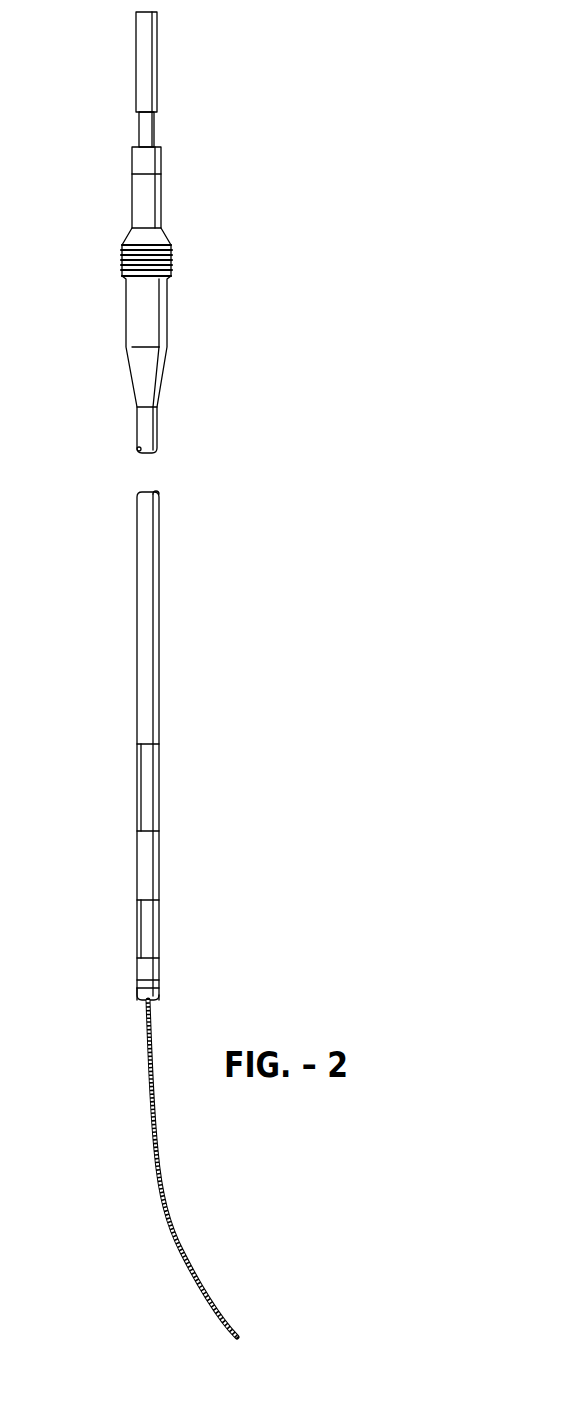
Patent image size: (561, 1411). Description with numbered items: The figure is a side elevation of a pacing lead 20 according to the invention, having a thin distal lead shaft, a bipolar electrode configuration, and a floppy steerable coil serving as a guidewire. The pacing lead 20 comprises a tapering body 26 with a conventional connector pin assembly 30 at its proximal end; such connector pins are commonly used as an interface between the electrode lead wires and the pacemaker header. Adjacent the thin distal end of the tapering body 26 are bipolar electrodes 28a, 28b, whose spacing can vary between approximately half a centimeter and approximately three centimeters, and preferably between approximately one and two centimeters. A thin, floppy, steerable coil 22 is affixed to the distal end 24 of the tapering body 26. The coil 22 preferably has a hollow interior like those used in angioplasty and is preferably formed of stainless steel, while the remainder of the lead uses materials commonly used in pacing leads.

The pacing lead 20 is at (232, 517).
The floppy steerable coil 22 is at (166, 1192).
The distal end 24 is at (130, 1010).
The tapering body 26 is at (150, 634).
The bipolar electrode 28a is at (165, 742).
The bipolar electrode 28b is at (165, 898).
The connector pin assembly 30 is at (162, 290).